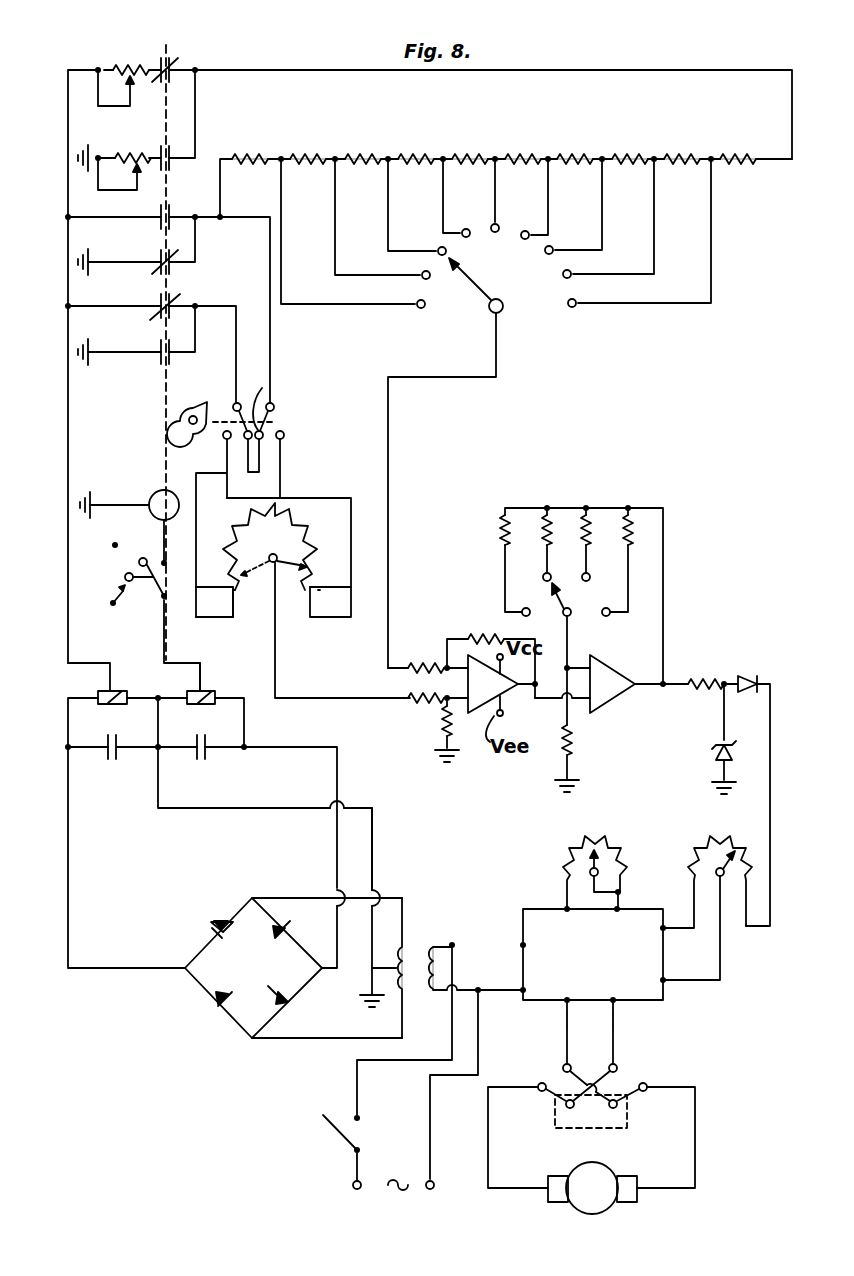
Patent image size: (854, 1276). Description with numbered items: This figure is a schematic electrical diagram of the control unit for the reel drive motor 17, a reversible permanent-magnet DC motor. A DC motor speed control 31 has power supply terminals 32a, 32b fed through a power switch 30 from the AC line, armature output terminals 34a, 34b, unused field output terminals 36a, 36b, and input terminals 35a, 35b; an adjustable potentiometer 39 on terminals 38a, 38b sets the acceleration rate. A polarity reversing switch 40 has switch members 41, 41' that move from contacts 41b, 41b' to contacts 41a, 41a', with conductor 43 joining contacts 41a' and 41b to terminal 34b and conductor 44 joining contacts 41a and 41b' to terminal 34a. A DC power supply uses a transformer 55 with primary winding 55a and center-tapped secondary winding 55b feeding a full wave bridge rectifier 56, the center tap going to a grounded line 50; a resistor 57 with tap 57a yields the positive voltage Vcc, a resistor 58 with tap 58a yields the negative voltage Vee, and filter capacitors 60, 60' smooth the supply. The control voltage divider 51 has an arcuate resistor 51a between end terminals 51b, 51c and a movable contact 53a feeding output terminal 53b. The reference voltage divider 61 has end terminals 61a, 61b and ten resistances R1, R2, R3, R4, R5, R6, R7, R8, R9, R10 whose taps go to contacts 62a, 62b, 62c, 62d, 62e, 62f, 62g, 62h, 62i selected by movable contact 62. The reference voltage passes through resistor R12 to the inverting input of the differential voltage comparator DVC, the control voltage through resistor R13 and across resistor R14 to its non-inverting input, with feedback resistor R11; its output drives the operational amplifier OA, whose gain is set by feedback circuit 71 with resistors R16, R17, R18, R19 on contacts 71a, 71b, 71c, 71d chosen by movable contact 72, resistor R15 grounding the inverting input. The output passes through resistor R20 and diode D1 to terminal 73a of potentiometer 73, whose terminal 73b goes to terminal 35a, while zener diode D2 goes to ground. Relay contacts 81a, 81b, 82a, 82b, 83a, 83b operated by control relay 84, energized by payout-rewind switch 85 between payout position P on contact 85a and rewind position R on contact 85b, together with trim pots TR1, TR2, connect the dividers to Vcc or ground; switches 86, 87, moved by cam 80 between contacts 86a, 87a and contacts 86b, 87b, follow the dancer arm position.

The adjustable trim pot TR1 is at (124, 66).
The adjustable trim pot TR2 is at (139, 156).
The relay contact 81a is at (172, 68).
The relay contact 81b is at (171, 166).
The reference voltage divider 61 is at (488, 152).
The end terminal 61a is at (220, 218).
The end terminal 61b is at (790, 161).
The resistance R1 is at (242, 157).
The resistance R2 is at (298, 157).
The resistance R3 is at (353, 157).
The resistance R4 is at (406, 157).
The resistance R5 is at (460, 156).
The resistance R6 is at (530, 156).
The resistance R7 is at (582, 156).
The resistance R8 is at (632, 156).
The resistance R9 is at (684, 156).
The resistance R10 is at (734, 156).
The movable contact 62 is at (494, 292).
The switch contact 62a is at (419, 308).
The switch contact 62b is at (422, 278).
The switch contact 62c is at (438, 252).
The switch contact 62d is at (478, 214).
The switch contact 62e is at (498, 226).
The switch contact 62f is at (532, 234).
The switch contact 62g is at (553, 252).
The switch contact 62h is at (570, 276).
The switch contact 62i is at (574, 306).
The relay contact 82a is at (158, 269).
The relay contact 82b is at (160, 226).
The relay contact 83a is at (182, 305).
The relay contact 83b is at (156, 359).
The cam 80 is at (176, 428).
The control relay 84 is at (156, 490).
The payout-rewind switch 85 is at (152, 586).
The contact 85a is at (136, 558).
The contact 85b is at (166, 562).
The switch 86 is at (276, 412).
The contact 86a is at (284, 436).
The contact 86b is at (262, 387).
The switch 87 is at (234, 409).
The contact 87a is at (262, 442).
The contact 87b is at (224, 442).
The rewind position R is at (115, 545).
The payout position P is at (113, 603).
The positive output voltage Vcc is at (68, 660).
The negative output voltage Vee is at (182, 662).
The differential voltage comparator DVC is at (493, 684).
The operational amplifier OA is at (612, 684).
The control voltage divider 51 is at (263, 578).
The arcuate resistor 51a is at (306, 520).
The end terminal 51b is at (332, 599).
The end terminal 51c is at (216, 599).
The movable contact 53a is at (296, 564).
The output terminal 53b is at (277, 566).
The resistor 57 is at (110, 700).
The adjustable tap 57a is at (111, 691).
The resistor 58 is at (201, 700).
The adjustable tap 58a is at (206, 691).
The filter capacitor 60 is at (104, 773).
The filter capacitor 60' is at (225, 759).
The full wave bridge rectifier 56 is at (235, 902).
The grounded line 50 is at (374, 810).
The transformer 55 is at (430, 924).
The primary winding 55a is at (438, 948).
The secondary winding 55b is at (397, 946).
The power switch 30 is at (334, 1144).
The feedback resistor R11 is at (470, 634).
The resistor R12 is at (410, 662).
The resistor R13 is at (416, 700).
The resistor R14 is at (442, 734).
The resistor R15 is at (574, 744).
The resistor R16 is at (500, 522).
The resistor R17 is at (542, 518).
The resistor R18 is at (576, 524).
The resistor R19 is at (628, 534).
The resistor R20 is at (702, 680).
The selectively adjustable feedback circuit 71 is at (596, 494).
The switch contact 71a is at (528, 616).
The switch contact 71b is at (542, 578).
The switch contact 71c is at (590, 578).
The switch contact 71d is at (610, 616).
The movable contact 72 is at (566, 600).
The diode D1 is at (742, 676).
The zener diode D2 is at (718, 740).
The adjustable potentiometer 39 is at (580, 844).
The manually adjustable potentiometer 73 is at (704, 848).
The terminal 73a is at (752, 910).
The terminal 73b is at (694, 878).
The DC motor speed control 31 is at (532, 910).
The terminal 38a is at (568, 910).
The terminal 38b is at (616, 906).
The power supply terminal 32a is at (524, 946).
The power supply terminal 32b is at (524, 990).
The output terminal 34a is at (568, 1000).
The output terminal 34b is at (614, 1000).
The input terminal 35a is at (662, 928).
The input terminal 35b is at (664, 980).
The field output terminal 36a is at (656, 1014).
The field output terminal 36b is at (662, 1000).
The conductor 43 is at (608, 1042).
The conductor 44 is at (556, 1020).
The polarity reversing switch 40 is at (642, 1068).
The switch member 41 is at (530, 1100).
The switch member 41' is at (651, 1100).
The contact 41a is at (558, 1068).
The contact 41a' is at (623, 1068).
The contact 41b is at (535, 1122).
The contact 41b' is at (652, 1122).
The reel drive motor 17 is at (598, 1180).